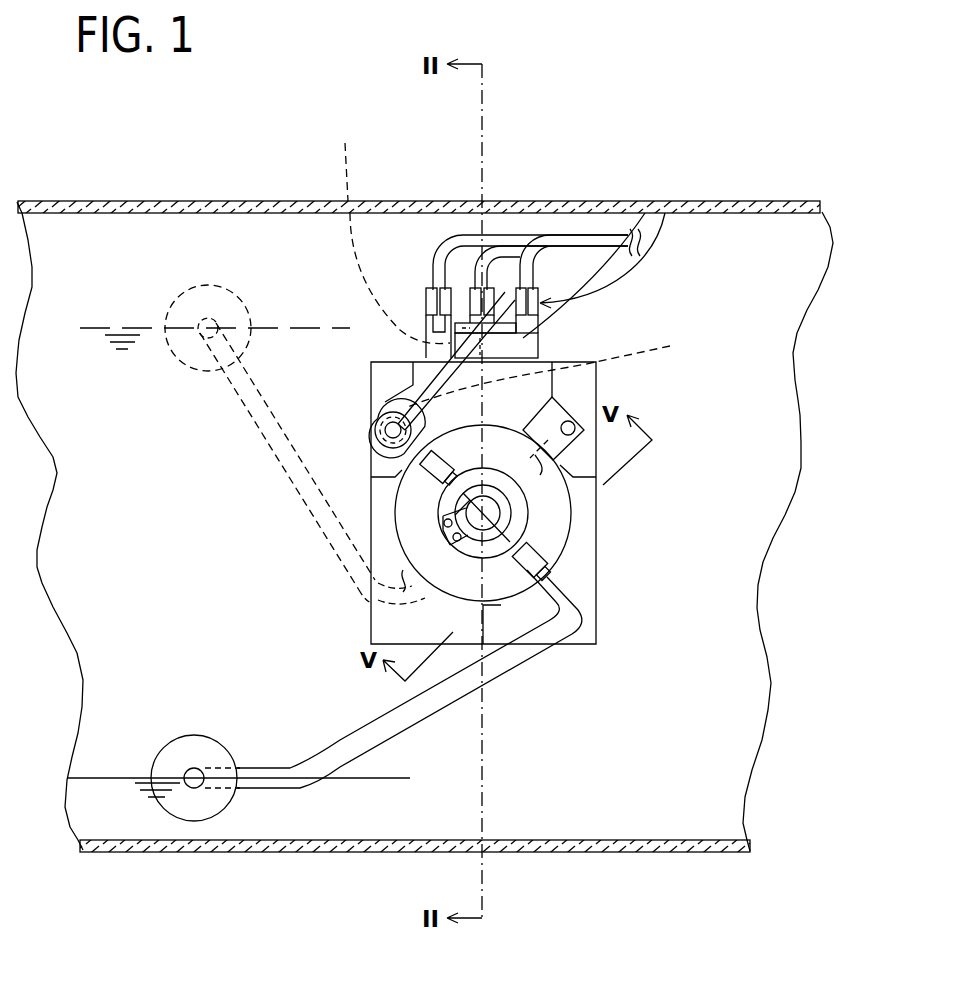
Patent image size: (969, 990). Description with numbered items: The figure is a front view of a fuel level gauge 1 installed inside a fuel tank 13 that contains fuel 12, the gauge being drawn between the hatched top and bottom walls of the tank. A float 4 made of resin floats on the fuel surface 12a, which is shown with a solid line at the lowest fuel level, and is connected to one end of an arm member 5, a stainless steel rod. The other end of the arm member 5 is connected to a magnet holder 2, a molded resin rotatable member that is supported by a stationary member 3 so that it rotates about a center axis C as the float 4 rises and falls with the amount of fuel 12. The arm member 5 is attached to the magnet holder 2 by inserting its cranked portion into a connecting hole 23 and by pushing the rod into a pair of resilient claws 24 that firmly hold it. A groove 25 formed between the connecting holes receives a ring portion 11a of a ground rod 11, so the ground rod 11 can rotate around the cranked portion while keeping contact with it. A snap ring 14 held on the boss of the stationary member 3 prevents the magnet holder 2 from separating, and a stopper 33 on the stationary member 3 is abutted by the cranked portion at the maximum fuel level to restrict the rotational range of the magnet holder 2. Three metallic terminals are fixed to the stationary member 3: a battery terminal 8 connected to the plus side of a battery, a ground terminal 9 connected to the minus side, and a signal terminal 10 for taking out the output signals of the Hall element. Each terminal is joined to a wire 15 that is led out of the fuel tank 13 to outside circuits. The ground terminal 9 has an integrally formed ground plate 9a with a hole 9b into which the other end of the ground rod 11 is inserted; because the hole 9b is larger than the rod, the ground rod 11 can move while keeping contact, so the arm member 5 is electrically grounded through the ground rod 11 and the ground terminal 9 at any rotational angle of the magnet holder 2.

The fuel level gauge 1 is at (614, 342).
The magnet holder 2 is at (578, 565).
The stationary member 3 is at (611, 624).
The float 4 is at (197, 735).
The arm member 5 is at (323, 745).
The battery terminal 8 is at (495, 259).
The ground terminal 9 is at (622, 235).
The ground plate 9a is at (668, 201).
The hole 9b is at (388, 230).
The signal terminal 10 is at (438, 240).
The ground rod 11 is at (511, 282).
The ring portion 11a is at (377, 452).
The fuel 12 is at (85, 807).
The fuel surface 12a is at (122, 778).
The fuel tank 13 is at (92, 201).
The snap ring 14 is at (466, 513).
The wires 15 is at (468, 288).
The connecting hole 23 is at (372, 439).
The claws 24 is at (460, 440).
The groove 25 is at (554, 372).
The stopper 33 is at (560, 470).
The center axis C is at (483, 513).